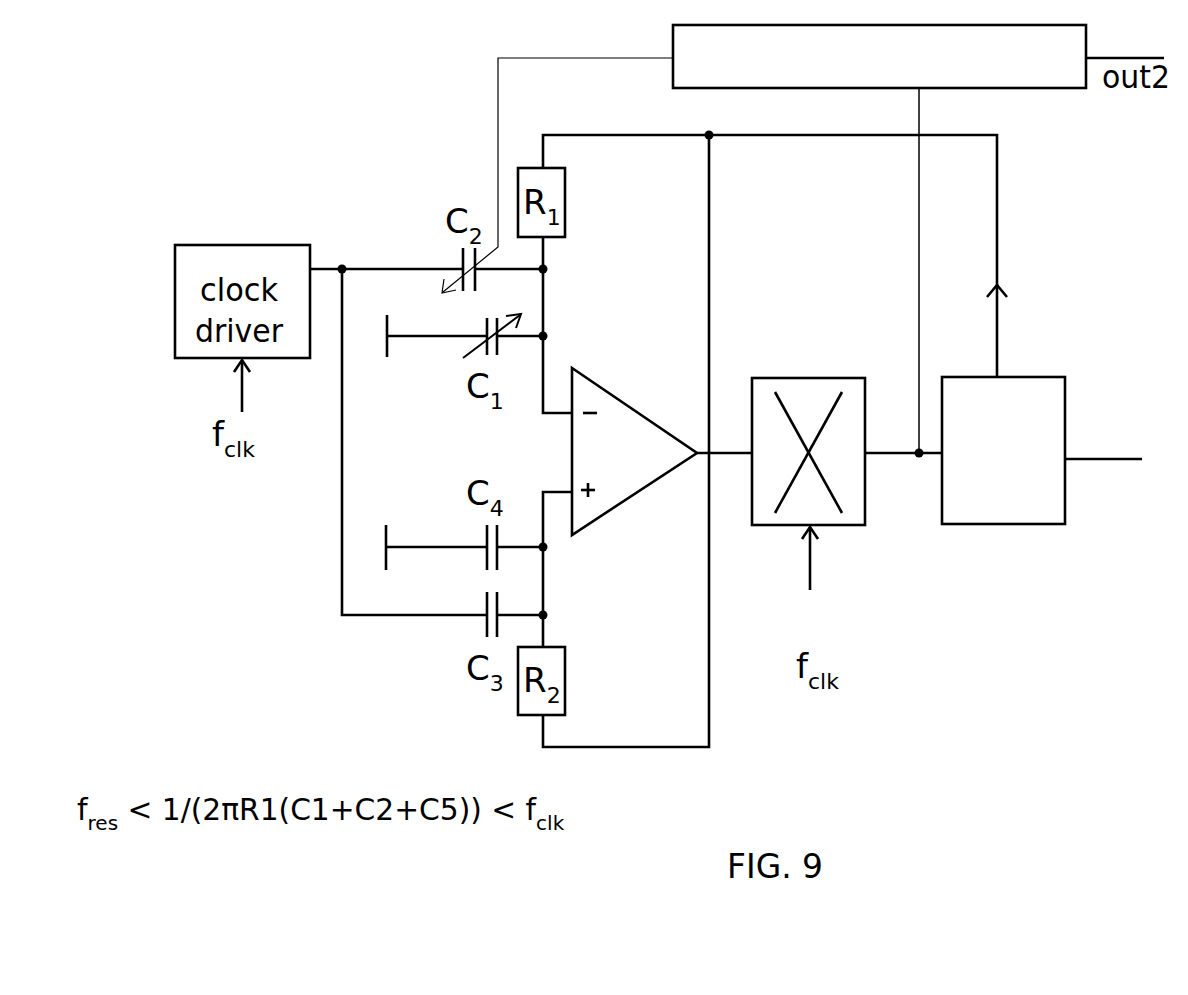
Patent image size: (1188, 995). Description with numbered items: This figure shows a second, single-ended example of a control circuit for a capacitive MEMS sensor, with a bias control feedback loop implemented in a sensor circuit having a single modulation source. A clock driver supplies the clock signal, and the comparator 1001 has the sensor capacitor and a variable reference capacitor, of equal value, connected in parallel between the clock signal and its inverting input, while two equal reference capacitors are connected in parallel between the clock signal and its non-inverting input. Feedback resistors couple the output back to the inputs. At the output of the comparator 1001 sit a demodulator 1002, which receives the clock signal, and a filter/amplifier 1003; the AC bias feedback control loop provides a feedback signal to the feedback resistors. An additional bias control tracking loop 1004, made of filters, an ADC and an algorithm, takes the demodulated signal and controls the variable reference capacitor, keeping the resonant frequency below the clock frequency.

The comparator 1001 is at (607, 390).
The demodulator 1002 is at (812, 378).
The filter/amplifier 1003 is at (1041, 377).
The bias control tracking loop 1004 is at (1029, 88).